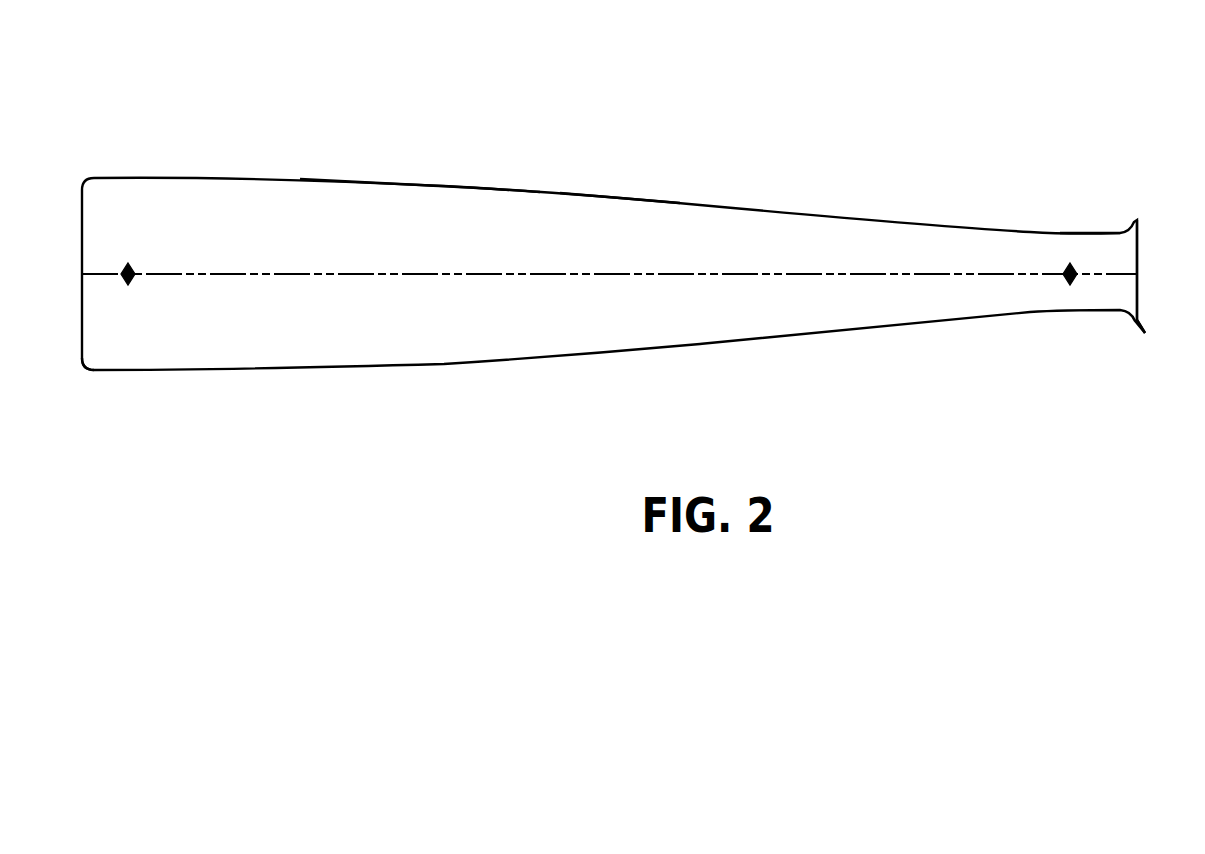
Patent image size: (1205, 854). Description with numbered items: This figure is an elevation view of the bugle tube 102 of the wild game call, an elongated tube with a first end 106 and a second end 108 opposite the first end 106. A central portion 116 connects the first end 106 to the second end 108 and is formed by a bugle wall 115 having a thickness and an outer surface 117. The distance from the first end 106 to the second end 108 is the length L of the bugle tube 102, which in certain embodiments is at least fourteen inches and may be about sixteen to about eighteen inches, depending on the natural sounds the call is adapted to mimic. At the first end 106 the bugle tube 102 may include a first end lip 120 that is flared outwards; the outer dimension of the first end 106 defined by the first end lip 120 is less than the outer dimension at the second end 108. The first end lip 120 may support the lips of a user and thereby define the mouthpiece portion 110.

The bugle tube 102 is at (190, 86).
The first end 106 is at (1140, 223).
The second end 108 is at (93, 371).
The mouthpiece portion 110 is at (1108, 236).
The bugle wall 115 is at (444, 205).
The central portion 116 is at (596, 208).
The outer surface 117 is at (326, 207).
The first end lip 120 is at (1157, 343).